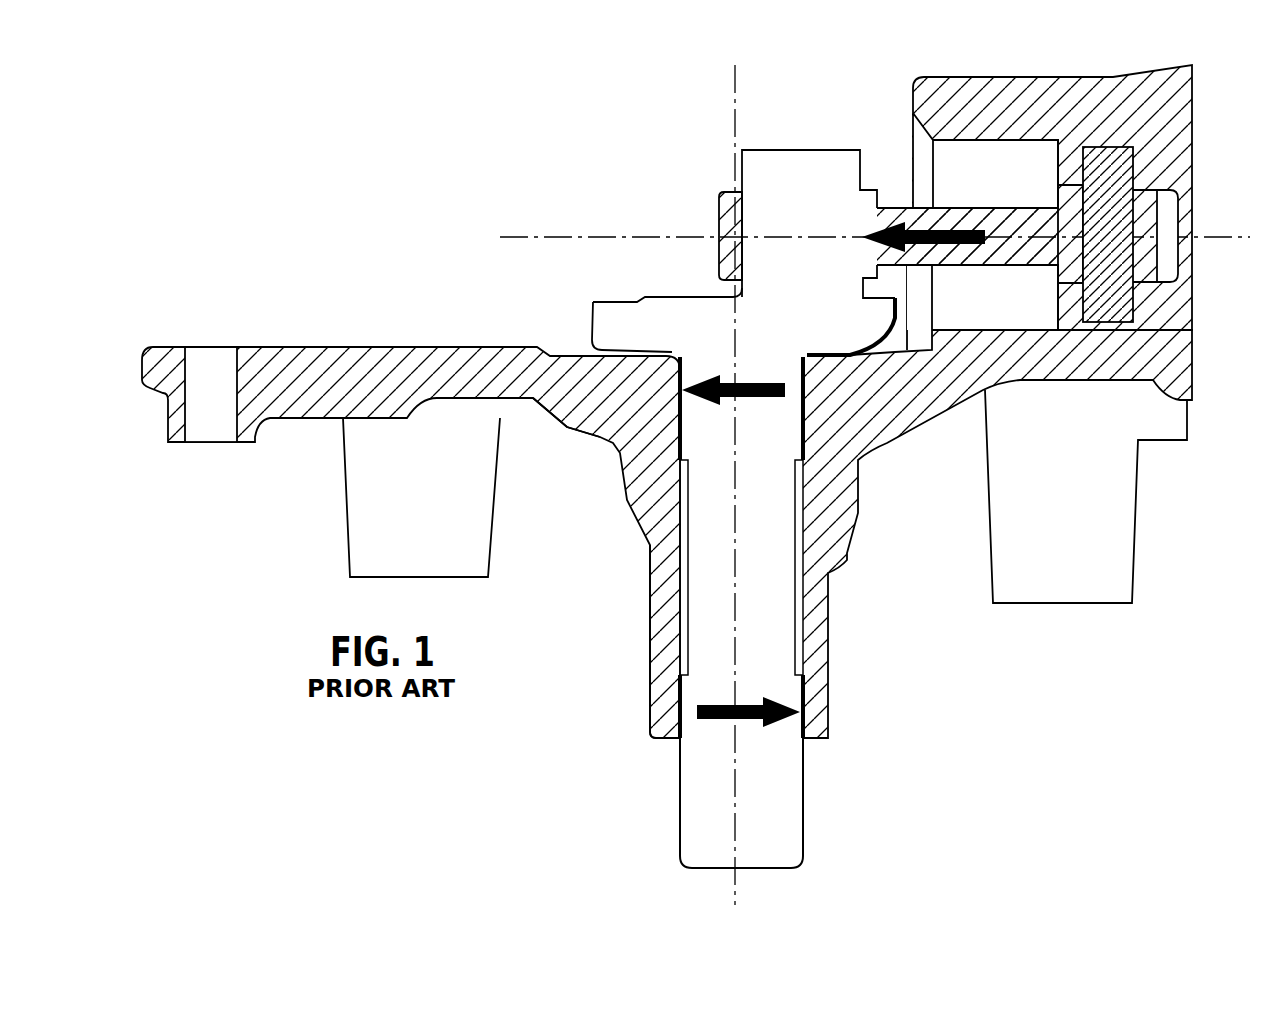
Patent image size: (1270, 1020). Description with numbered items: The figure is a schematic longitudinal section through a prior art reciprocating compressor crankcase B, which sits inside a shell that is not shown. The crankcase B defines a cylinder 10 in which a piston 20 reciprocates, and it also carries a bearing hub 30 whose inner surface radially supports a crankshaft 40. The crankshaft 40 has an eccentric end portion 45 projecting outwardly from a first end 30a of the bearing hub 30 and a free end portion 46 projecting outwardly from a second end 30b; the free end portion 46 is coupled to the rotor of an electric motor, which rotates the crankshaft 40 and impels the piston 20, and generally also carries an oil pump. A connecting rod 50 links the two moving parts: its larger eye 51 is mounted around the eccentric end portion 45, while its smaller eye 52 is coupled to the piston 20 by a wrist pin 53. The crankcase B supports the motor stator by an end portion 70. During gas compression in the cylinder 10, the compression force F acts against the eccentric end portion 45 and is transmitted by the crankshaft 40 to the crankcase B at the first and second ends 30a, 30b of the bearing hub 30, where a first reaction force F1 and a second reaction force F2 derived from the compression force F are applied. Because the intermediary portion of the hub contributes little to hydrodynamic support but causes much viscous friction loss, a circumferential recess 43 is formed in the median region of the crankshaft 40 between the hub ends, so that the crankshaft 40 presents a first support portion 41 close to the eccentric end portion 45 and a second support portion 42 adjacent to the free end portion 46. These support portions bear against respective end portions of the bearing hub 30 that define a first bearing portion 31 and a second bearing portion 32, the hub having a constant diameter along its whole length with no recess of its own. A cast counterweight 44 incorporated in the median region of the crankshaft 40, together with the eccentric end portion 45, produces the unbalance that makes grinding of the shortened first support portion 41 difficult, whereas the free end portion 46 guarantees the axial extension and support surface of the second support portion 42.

The cylinder 10 is at (1025, 147).
The piston 20 is at (1160, 165).
The bearing hub 30 is at (822, 515).
The first end 30a is at (790, 357).
The second end 30b is at (803, 740).
The first bearing portion 31 is at (685, 413).
The second bearing portion 32 is at (684, 695).
The crankshaft 40 is at (713, 580).
The first support portion 41 is at (676, 425).
The second support portion 42 is at (680, 707).
The circumferential recess 43 is at (683, 535).
The cast counterweight 44 is at (623, 322).
The eccentric end portion 45 is at (768, 178).
The free end portion 46 is at (679, 830).
The connecting rod 50 is at (967, 204).
The larger eye 51 is at (716, 209).
The smaller eye 52 is at (1165, 255).
The wrist pin 53 is at (1107, 180).
The end portion 70 is at (393, 580).
The crankcase B is at (376, 341).
The compression force F is at (938, 248).
The first reaction force F1 is at (728, 375).
The second reaction force F2 is at (745, 698).